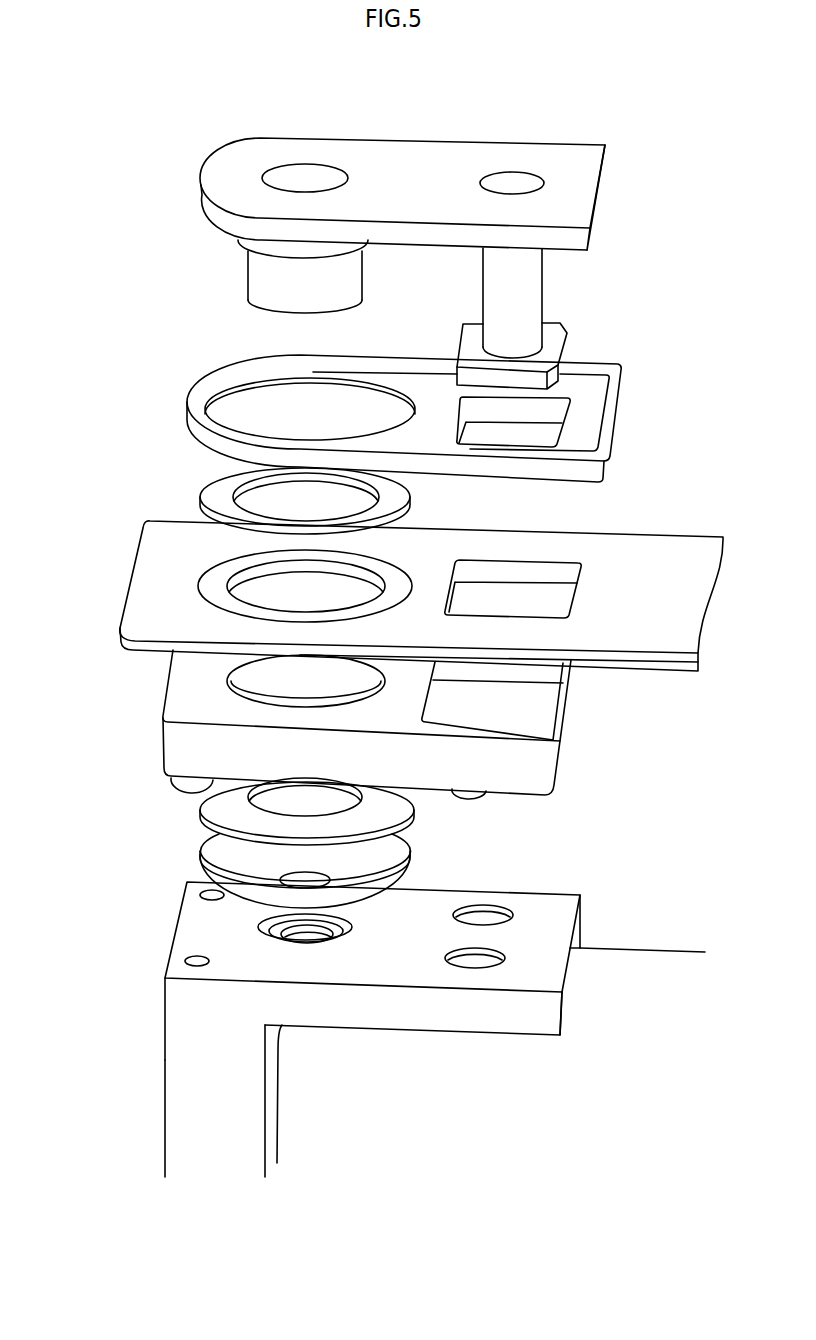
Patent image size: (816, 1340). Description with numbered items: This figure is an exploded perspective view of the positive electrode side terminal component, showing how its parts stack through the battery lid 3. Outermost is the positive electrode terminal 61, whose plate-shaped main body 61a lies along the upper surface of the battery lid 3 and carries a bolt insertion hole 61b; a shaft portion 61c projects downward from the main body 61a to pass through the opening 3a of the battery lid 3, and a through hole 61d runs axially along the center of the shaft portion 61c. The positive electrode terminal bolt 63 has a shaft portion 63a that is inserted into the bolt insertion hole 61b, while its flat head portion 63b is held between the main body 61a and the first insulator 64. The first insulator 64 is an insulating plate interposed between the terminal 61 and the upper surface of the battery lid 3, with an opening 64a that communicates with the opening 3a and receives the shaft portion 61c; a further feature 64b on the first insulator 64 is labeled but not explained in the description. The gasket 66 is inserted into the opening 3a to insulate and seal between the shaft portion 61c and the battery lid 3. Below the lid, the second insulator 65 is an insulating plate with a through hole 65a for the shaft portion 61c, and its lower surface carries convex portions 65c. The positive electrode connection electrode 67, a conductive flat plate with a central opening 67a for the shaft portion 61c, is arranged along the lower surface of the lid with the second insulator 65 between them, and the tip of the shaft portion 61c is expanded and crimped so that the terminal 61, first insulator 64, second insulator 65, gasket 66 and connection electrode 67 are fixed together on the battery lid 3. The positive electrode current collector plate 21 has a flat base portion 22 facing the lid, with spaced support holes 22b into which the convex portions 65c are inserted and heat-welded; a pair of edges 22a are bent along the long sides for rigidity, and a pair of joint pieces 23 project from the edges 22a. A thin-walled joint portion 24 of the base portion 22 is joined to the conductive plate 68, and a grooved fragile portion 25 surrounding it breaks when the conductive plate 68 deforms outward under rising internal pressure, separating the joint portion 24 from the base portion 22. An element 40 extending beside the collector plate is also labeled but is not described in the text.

The battery lid 3 is at (397, 596).
The opening 3a is at (232, 598).
The positive electrode current collector plate 21 is at (347, 1020).
The base portion 22 is at (359, 977).
The edges 22a is at (435, 1018).
The support holes 22b is at (195, 892).
The joint pieces 23 is at (165, 1127).
The joint portion 24 is at (303, 935).
The fragile portion 25 is at (352, 936).
The panel 40 is at (670, 957).
The positive electrode terminal 61 is at (391, 192).
The main body 61a is at (412, 143).
The bolt insertion hole 61b is at (530, 183).
The shaft portion 61c is at (257, 272).
The through hole 61d is at (310, 170).
The positive electrode terminal bolt 63 is at (566, 318).
The shaft portion 63a is at (530, 278).
The head portion 63b is at (557, 327).
The first insulator 64 is at (401, 412).
The opening 64a is at (210, 388).
The recess of holder 64b is at (540, 440).
The second insulator 65 is at (306, 742).
The through hole 65a is at (248, 685).
The convex portions 65c is at (178, 787).
The gasket 66 is at (210, 492).
The positive electrode connection electrode 67 is at (307, 811).
The opening 67a is at (353, 797).
The conductive plate 68 is at (205, 857).